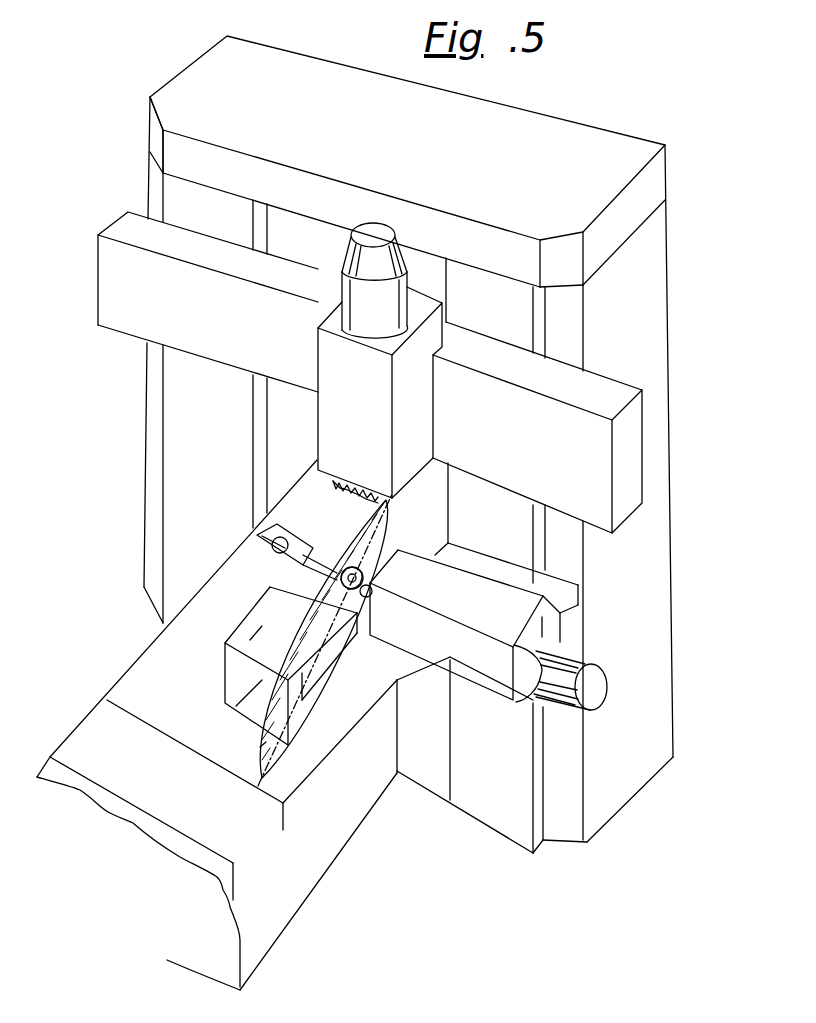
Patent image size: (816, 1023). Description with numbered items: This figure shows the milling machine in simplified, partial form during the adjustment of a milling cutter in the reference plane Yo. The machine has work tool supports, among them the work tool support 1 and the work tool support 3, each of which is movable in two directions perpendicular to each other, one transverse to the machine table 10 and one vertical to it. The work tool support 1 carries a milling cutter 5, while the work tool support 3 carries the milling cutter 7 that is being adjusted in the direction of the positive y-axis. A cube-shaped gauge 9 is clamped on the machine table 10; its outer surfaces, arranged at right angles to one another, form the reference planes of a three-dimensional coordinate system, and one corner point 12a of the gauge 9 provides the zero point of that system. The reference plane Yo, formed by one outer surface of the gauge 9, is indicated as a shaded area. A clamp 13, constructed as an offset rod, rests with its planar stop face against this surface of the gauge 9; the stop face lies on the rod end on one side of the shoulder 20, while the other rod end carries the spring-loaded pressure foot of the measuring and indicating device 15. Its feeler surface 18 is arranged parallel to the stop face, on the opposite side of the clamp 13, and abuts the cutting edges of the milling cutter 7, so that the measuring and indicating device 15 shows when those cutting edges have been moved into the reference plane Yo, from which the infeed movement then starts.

The work tool support 1 is at (383, 455).
The work tool support 3 is at (488, 675).
The milling cutter 5 is at (350, 487).
The milling cutter 7 is at (368, 585).
The gauge 9 is at (227, 663).
The machine table 10 is at (313, 737).
The corner point 12a is at (236, 706).
The clamp 13 is at (340, 643).
The measuring and indicating device 15 is at (282, 563).
The feeler surface 18 is at (366, 546).
The shoulder 20 is at (250, 640).
The reference plane y0 Yo is at (260, 747).